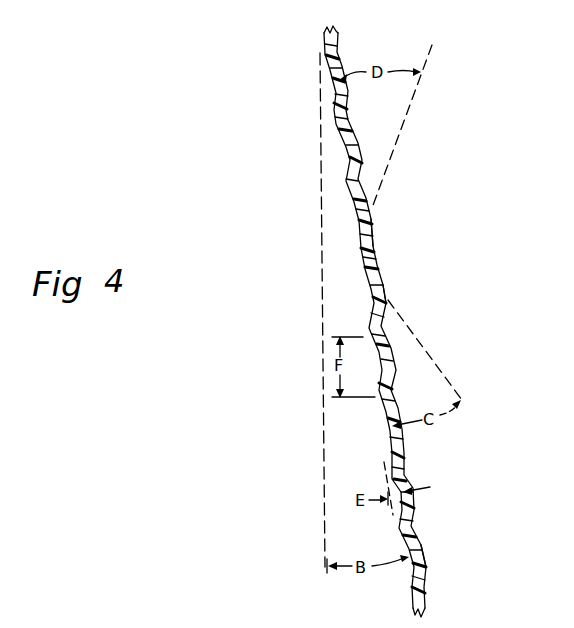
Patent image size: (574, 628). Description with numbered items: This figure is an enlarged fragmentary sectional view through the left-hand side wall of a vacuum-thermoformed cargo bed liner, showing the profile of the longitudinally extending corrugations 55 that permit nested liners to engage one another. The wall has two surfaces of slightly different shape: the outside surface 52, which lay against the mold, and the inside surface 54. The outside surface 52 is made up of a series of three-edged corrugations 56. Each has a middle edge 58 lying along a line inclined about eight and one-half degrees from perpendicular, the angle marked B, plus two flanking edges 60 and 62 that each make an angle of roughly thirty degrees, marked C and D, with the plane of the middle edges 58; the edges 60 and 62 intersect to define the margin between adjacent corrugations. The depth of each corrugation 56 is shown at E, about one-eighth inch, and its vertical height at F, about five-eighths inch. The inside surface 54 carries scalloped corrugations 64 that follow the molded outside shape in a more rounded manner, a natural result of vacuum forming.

The outside surface 52 is at (350, 158).
The inside surface 54 is at (372, 223).
The corrugations 55 is at (332, 117).
The three-edged corrugations 56 is at (372, 218).
The middle edges 58 is at (413, 508).
The edges 60 is at (365, 267).
The edges 62 is at (370, 248).
The scalloped corrugations 64 is at (403, 443).